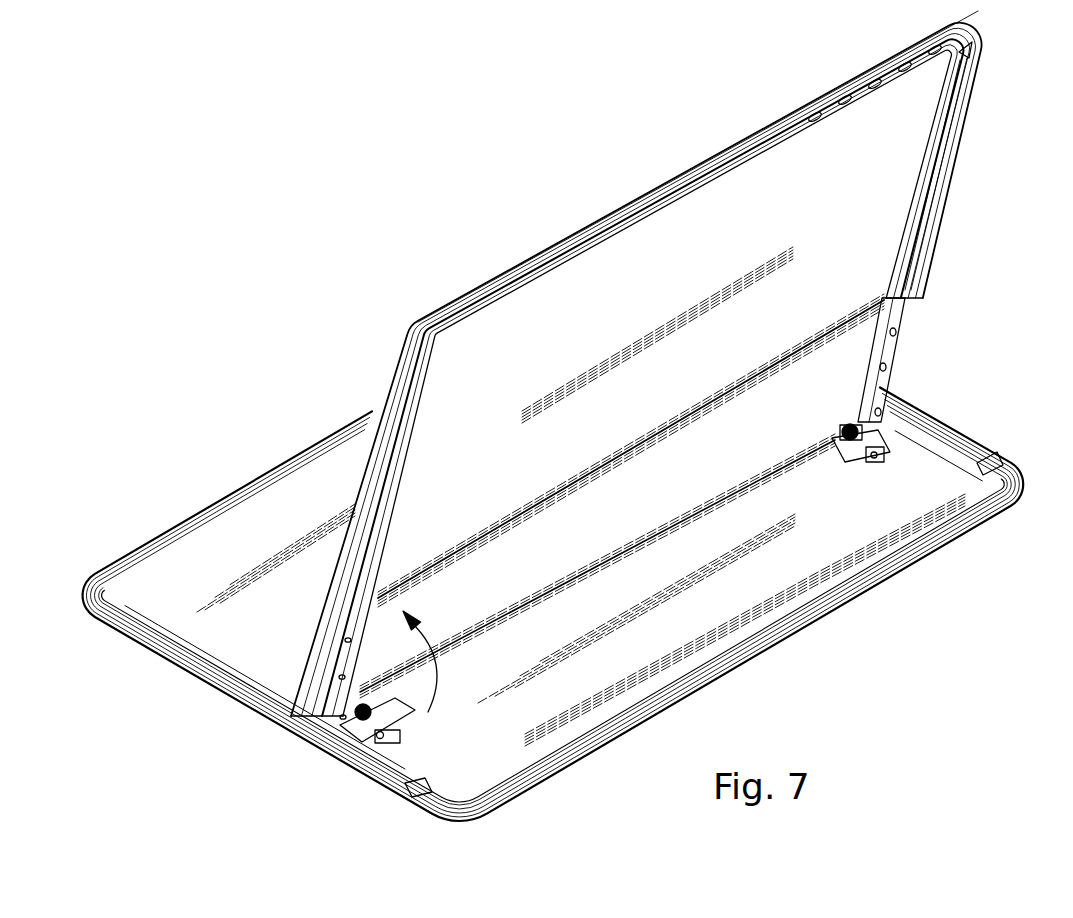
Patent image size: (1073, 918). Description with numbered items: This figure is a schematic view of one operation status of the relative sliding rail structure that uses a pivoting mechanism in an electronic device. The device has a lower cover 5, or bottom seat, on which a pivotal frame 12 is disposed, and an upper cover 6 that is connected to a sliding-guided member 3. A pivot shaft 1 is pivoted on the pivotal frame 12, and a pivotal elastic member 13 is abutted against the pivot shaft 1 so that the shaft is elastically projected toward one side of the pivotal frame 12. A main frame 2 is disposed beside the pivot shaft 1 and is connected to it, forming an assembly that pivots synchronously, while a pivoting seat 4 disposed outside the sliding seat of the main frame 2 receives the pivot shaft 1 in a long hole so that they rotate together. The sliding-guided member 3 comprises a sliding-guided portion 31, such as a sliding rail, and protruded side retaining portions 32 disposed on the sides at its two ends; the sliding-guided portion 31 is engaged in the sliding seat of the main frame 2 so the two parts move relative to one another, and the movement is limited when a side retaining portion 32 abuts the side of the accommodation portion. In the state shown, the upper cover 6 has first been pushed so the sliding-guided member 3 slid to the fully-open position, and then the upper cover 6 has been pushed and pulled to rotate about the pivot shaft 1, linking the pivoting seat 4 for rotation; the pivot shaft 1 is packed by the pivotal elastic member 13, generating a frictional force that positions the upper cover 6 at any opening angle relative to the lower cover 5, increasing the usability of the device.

The pivot shaft 1 is at (843, 447).
The main frame 2 is at (833, 385).
The sliding-guided member 3 is at (947, 115).
The pivoting seat 4 is at (893, 347).
The lower cover 5 is at (790, 637).
The upper cover 6 is at (666, 227).
The pivotal frame 12 is at (880, 452).
The pivotal elastic member 13 is at (860, 457).
The sliding-guided portion 31 is at (910, 245).
The side retaining portion 32 is at (974, 44).